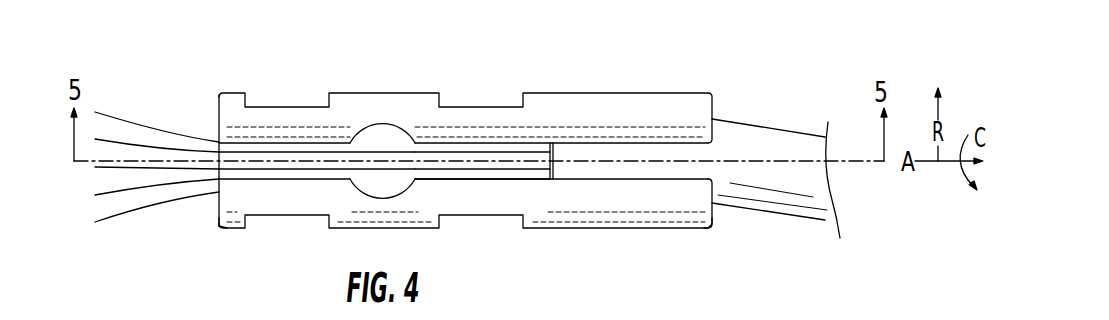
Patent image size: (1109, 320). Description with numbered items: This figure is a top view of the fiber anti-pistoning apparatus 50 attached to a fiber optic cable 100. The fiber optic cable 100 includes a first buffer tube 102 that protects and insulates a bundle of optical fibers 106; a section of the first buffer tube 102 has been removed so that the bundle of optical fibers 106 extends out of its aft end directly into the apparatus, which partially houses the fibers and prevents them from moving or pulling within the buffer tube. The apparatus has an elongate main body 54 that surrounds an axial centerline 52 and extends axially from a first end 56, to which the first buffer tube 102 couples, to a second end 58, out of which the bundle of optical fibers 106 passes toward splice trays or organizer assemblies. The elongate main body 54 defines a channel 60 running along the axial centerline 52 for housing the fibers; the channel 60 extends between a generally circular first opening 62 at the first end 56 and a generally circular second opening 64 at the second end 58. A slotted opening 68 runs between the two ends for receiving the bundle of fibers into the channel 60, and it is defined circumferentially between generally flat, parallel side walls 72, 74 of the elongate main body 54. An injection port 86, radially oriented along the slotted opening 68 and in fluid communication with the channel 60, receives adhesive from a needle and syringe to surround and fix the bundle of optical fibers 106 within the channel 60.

The fiber anti-pistoning apparatus 50 is at (625, 68).
The axial centerline 52 is at (278, 162).
The elongate main body 54 is at (620, 213).
The first end 56 is at (712, 229).
The second end 58 is at (219, 229).
The channel 60 is at (318, 145).
The first opening 62 is at (722, 80).
The second opening 64 is at (200, 98).
The slotted opening 68 is at (492, 150).
The side wall 72 is at (538, 143).
The side wall 74 is at (498, 181).
The injection port 86 is at (404, 130).
The fiber optic cable 100 is at (750, 123).
The first buffer tube 102 is at (770, 210).
The bundle of optical fibers 106 is at (118, 92).